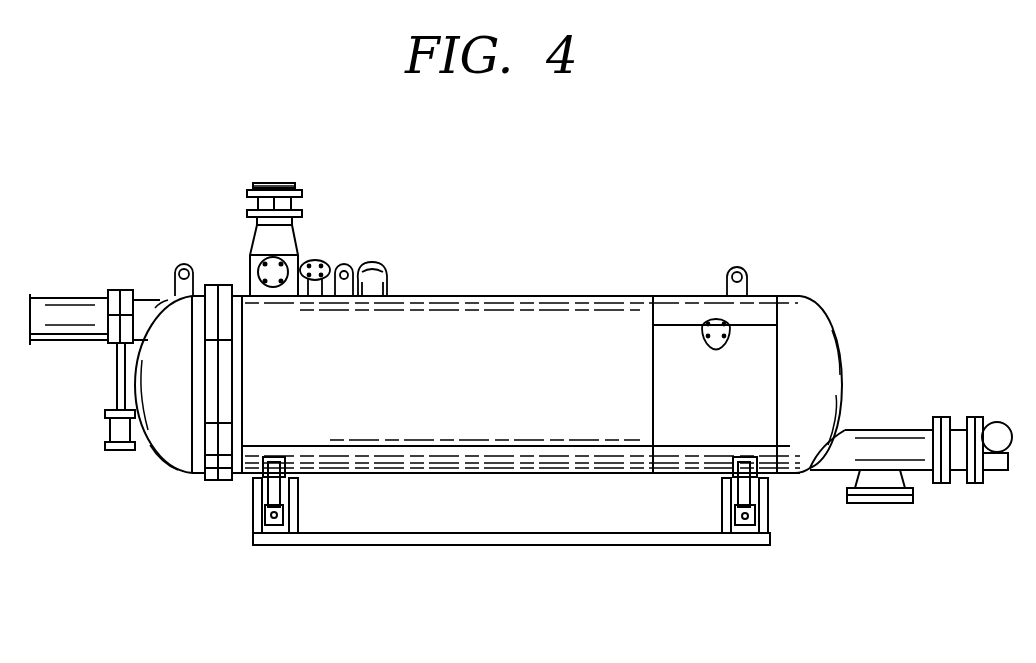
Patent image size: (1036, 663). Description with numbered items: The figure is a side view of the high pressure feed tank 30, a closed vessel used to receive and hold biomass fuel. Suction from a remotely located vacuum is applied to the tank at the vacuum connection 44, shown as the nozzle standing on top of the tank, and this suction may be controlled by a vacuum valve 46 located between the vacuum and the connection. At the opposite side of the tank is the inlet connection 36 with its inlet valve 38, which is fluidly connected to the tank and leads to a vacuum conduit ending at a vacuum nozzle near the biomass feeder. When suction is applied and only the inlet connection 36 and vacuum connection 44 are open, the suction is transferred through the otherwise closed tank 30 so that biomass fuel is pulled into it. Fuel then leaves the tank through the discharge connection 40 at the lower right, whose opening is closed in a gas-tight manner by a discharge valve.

The high pressure feed tank 30 is at (573, 296).
The inlet connection 36 is at (18, 348).
The inlet valve 38 is at (108, 280).
The discharge connection 40 is at (908, 522).
The vacuum connection 44 is at (332, 188).
The vacuum valve 46 is at (226, 194).